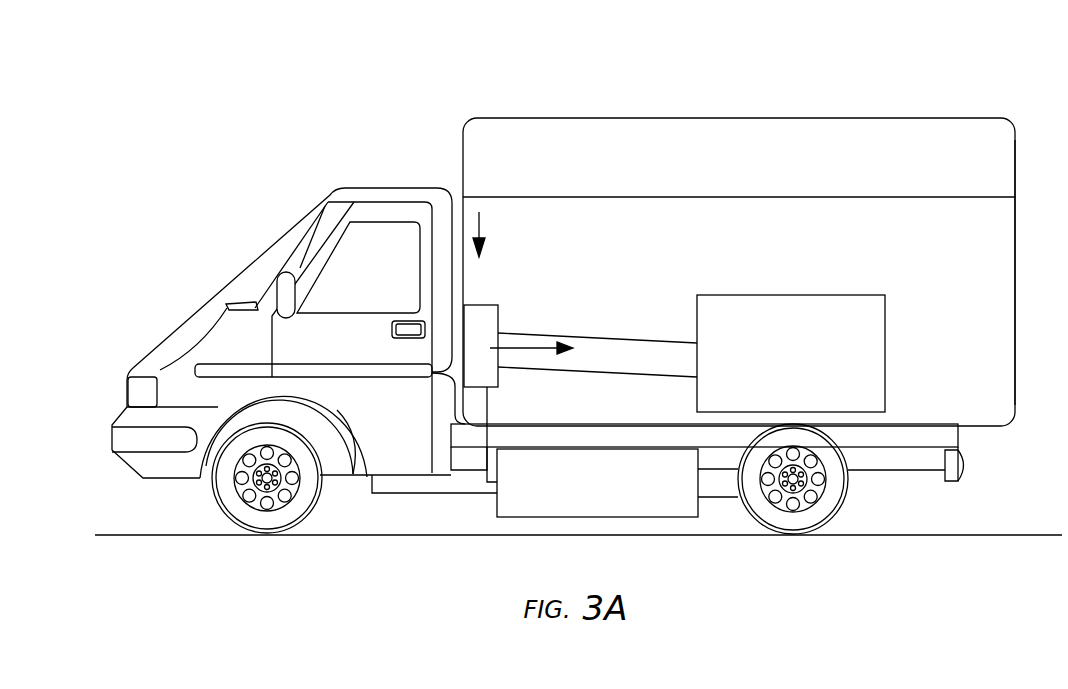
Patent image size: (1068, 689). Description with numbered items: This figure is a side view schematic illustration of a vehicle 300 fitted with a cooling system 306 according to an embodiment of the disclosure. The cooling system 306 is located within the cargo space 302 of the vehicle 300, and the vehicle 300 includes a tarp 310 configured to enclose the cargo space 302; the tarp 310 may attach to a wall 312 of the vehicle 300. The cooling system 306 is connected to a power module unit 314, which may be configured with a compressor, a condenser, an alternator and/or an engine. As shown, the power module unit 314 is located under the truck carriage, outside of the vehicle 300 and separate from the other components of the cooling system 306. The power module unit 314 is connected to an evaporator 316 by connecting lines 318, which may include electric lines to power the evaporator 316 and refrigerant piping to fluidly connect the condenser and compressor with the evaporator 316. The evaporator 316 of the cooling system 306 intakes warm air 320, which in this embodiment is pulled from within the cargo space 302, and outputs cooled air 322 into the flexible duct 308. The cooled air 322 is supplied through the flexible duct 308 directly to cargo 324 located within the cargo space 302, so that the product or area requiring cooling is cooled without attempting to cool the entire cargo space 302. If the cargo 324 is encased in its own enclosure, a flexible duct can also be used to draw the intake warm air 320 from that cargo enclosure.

The vehicle 300 is at (315, 140).
The cargo space 302 is at (895, 140).
The cooling system 306 is at (524, 286).
The flexible duct 308 is at (640, 338).
The tarp 310 is at (633, 117).
The wall 312 is at (992, 270).
The power module unit 314 is at (555, 497).
The evaporator 316 is at (498, 323).
The connecting lines 318 is at (482, 457).
The warm air 320 is at (482, 227).
The cooled air 322 is at (517, 352).
The cargo 324 is at (772, 364).